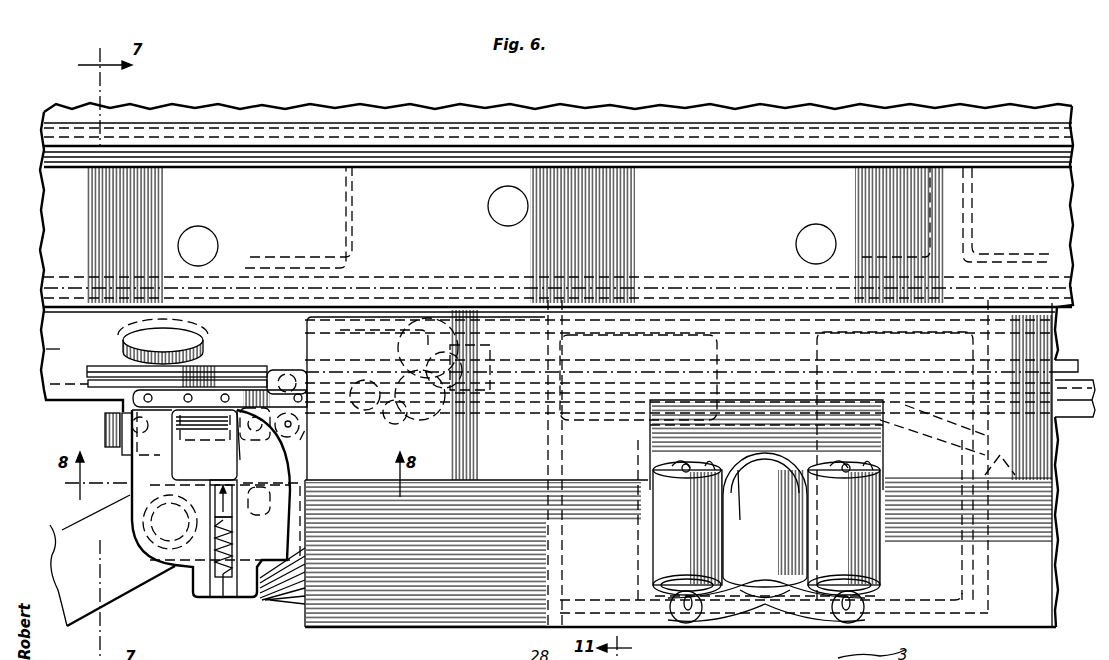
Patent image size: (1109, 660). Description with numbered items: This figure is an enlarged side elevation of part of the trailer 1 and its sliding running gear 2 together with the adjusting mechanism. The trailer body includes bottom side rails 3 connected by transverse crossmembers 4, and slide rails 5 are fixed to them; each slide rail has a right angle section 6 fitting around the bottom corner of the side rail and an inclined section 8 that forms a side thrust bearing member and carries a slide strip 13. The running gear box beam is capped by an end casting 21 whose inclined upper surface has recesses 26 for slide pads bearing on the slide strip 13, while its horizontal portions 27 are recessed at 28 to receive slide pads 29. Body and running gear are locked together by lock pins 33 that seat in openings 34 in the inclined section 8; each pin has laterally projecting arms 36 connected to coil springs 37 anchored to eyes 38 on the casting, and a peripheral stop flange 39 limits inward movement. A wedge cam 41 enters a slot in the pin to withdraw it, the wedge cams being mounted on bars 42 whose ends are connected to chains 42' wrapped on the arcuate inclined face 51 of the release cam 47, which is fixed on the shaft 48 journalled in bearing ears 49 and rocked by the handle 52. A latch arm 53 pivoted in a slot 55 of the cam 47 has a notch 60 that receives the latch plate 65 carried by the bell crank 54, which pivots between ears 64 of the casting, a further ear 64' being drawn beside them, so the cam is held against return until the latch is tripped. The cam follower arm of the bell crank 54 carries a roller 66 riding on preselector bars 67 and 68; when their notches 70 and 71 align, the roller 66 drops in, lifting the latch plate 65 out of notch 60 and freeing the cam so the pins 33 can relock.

The trailer 1 is at (736, 100).
The running gear 2 is at (778, 620).
The bottom side rails 3 is at (1060, 106).
The crossmembers 4 is at (358, 218).
The slide rails 5 is at (40, 376).
The right angle sections 6 is at (50, 247).
The inclined sections 8 is at (46, 312).
The slide strips 13 is at (48, 350).
The end castings 21 is at (515, 630).
The recesses 26 is at (398, 338).
The horizontal portions 27 is at (378, 320).
The recess 28 is at (492, 358).
The slide pads 29 is at (370, 302).
The lock pins 33 is at (766, 493).
The openings 34 is at (183, 346).
The laterally projecting arms 36 is at (705, 615).
The coil springs 37 is at (688, 582).
The eyes 38 is at (668, 462).
The peripheral stop flanges 39 is at (735, 465).
The wedge cam 41 is at (945, 452).
The bars 42 is at (1075, 404).
The chains 42' is at (269, 430).
The release cam 47 is at (130, 482).
The shaft 48 is at (174, 526).
The bearing ears 49 is at (275, 596).
The arcuate inclined face 51 is at (293, 490).
The handle 52 is at (62, 530).
The latch arm 53 is at (235, 520).
The bell crank 54 is at (248, 412).
The slot 55 is at (240, 504).
The notch 60 is at (235, 532).
The ears 64 is at (287, 389).
The roller 64' is at (316, 440).
The latch plate 65 is at (220, 435).
The roller 66 is at (406, 383).
The preselector bar 67 is at (98, 366).
The preselector bar 68 is at (95, 388).
The notches 70 is at (215, 366).
The notches 71 is at (247, 375).